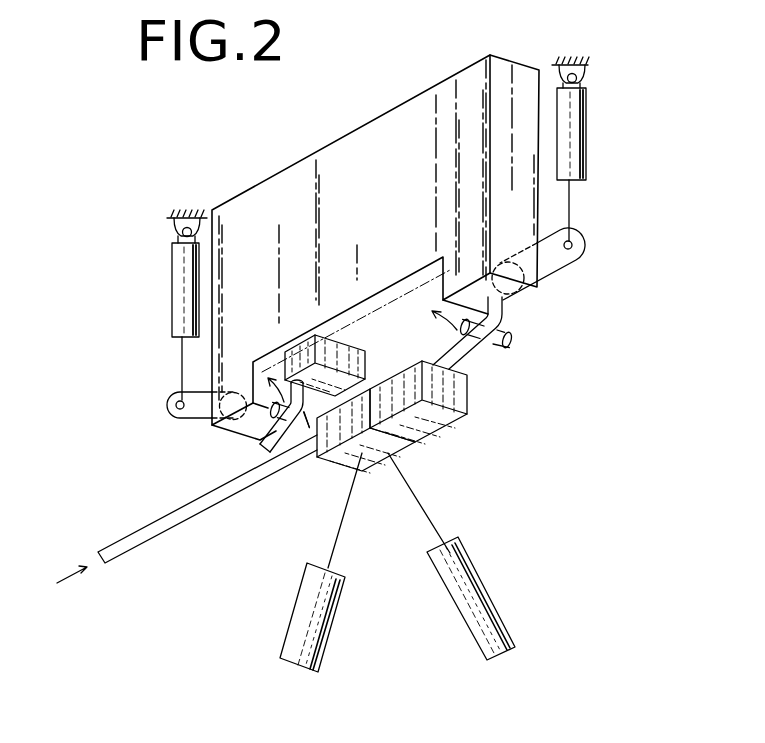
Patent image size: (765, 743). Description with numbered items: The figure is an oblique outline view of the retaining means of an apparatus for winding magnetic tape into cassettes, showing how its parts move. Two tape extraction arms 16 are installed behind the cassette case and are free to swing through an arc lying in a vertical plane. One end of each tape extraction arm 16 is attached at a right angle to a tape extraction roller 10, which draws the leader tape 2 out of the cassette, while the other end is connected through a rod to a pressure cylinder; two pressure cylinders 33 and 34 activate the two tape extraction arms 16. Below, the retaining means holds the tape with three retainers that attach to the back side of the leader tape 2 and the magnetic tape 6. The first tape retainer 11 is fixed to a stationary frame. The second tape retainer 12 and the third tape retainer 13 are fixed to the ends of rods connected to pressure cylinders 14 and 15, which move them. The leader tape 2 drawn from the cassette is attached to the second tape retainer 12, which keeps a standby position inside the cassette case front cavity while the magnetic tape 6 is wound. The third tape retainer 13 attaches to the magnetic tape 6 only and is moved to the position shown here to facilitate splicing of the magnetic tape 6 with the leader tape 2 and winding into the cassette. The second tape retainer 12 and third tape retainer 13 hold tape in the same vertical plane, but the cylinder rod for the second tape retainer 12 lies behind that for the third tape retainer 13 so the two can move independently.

The leader tape 2 is at (262, 446).
The magnetic tape 6 is at (133, 547).
The tape extraction roller 10 is at (307, 430).
The first tape retainer 11 is at (467, 400).
The second tape retainer 12 is at (360, 360).
The third tape retainer 13 is at (373, 467).
The pressure cylinder 14 is at (513, 633).
The pressure cylinder 15 is at (320, 660).
The tape extraction arm 16 is at (182, 420).
The pressure cylinder 33 is at (586, 133).
The pressure cylinder 34 is at (173, 313).